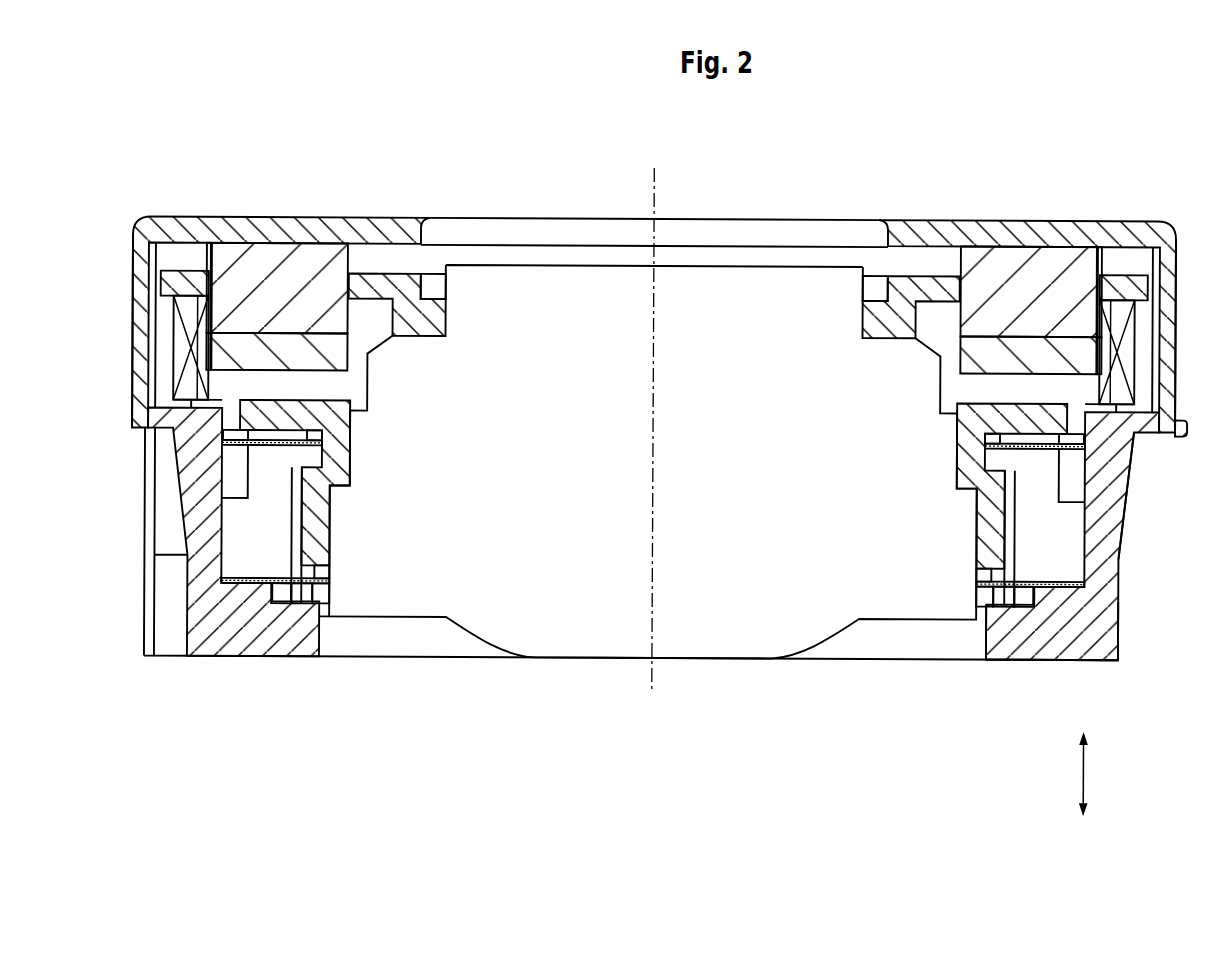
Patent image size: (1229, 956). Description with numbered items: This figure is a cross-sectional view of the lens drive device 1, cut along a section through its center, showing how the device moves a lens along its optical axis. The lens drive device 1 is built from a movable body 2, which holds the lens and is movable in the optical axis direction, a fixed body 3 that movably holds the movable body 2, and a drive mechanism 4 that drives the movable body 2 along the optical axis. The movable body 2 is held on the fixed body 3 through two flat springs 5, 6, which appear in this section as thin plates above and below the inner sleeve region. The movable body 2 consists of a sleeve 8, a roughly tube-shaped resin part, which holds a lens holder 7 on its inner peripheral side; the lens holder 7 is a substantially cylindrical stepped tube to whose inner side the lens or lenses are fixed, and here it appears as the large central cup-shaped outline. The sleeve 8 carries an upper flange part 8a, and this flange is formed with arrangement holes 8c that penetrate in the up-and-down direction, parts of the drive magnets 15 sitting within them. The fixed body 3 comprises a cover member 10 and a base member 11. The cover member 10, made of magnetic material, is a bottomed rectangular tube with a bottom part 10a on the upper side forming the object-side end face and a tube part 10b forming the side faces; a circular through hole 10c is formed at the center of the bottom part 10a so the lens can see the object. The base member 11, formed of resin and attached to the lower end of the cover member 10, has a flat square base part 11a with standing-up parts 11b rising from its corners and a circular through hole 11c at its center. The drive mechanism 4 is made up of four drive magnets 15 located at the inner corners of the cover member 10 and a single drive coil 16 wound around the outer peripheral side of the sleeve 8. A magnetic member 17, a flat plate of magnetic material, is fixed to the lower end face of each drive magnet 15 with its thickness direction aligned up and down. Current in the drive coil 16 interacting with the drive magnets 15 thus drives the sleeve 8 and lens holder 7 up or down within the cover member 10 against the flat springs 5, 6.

The lens drive device 1 is at (905, 143).
The movable body 2 is at (893, 275).
The fixed body 3 is at (1197, 442).
The drive mechanism 4 is at (1139, 316).
The flat spring 5 is at (1027, 450).
The flat spring 6 is at (1062, 580).
The lens holder 7 is at (838, 266).
The sleeve 8 is at (650, 290).
The flange part 8a is at (173, 268).
The arrangement hole 8c is at (198, 282).
The cover member 10 is at (677, 318).
The bottom part 10a is at (1018, 221).
The tube part 10b is at (1176, 270).
The through hole 10c is at (432, 220).
The base member 11 is at (1132, 485).
The base part 11a is at (1119, 612).
The standing-up part 11b is at (1127, 527).
The through hole 11c is at (984, 640).
The drive magnet 15 is at (207, 308).
The drive coil 16 is at (1133, 395).
The magnetic member 17 is at (207, 348).